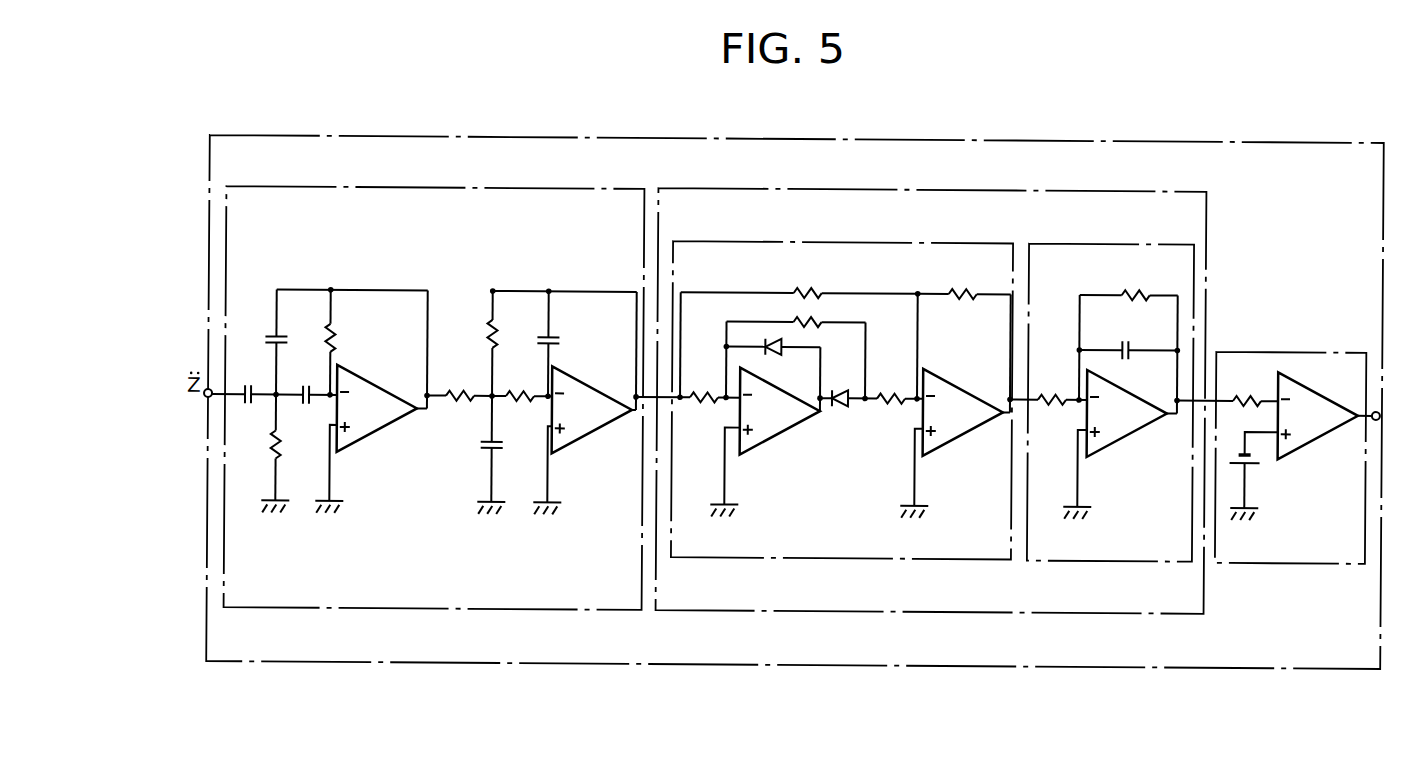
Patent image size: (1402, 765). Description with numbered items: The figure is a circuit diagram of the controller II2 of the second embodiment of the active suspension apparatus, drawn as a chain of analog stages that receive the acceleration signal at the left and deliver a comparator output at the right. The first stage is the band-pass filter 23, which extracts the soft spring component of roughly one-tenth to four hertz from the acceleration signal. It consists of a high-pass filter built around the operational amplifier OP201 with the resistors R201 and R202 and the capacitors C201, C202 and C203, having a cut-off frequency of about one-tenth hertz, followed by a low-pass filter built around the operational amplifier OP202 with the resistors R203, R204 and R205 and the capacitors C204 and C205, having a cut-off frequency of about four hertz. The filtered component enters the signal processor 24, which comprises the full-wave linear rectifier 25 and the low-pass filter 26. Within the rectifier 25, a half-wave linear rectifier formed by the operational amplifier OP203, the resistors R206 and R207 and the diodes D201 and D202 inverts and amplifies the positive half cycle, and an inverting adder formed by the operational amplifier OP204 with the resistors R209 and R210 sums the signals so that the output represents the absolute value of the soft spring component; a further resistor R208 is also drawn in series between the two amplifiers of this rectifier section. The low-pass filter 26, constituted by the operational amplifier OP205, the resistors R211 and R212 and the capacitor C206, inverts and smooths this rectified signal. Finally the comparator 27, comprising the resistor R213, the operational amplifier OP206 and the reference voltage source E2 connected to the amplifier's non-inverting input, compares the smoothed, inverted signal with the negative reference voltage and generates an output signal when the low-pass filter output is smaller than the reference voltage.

The controller II2 is at (794, 666).
The band-pass filter 23 is at (473, 200).
The signal processor 24 is at (918, 200).
The full-wave linear rectifier 25 is at (812, 245).
The low-pass filter 26 is at (1110, 244).
The comparator 27 is at (1285, 349).
The capacitor C201 is at (264, 383).
The capacitor C202 is at (294, 341).
The capacitor C203 is at (310, 384).
The capacitor C204 is at (465, 454).
The capacitor C205 is at (570, 343).
The capacitor C206 is at (1128, 338).
The resistor R201 is at (290, 453).
The resistor R202 is at (356, 342).
The resistor R203 is at (459, 382).
The resistor R204 is at (470, 343).
The resistor R205 is at (522, 383).
The resistor R206 is at (711, 385).
The resistor R207 is at (822, 318).
The resistor R208 is at (895, 385).
The resistor R209 is at (799, 330).
The resistor R210 is at (964, 339).
The resistor R211 is at (1048, 388).
The resistor R212 is at (1128, 340).
The resistor R213 is at (1227, 391).
The diode D201 is at (784, 345).
The diode D202 is at (848, 387).
The operational amplifier OP201 is at (372, 402).
The operational amplifier OP202 is at (586, 403).
The operational amplifier OP203 is at (765, 442).
The operational amplifier OP204 is at (955, 444).
The operational amplifier OP205 is at (1120, 445).
The operational amplifier OP206 is at (1313, 416).
The reference voltage source E2 is at (1250, 487).